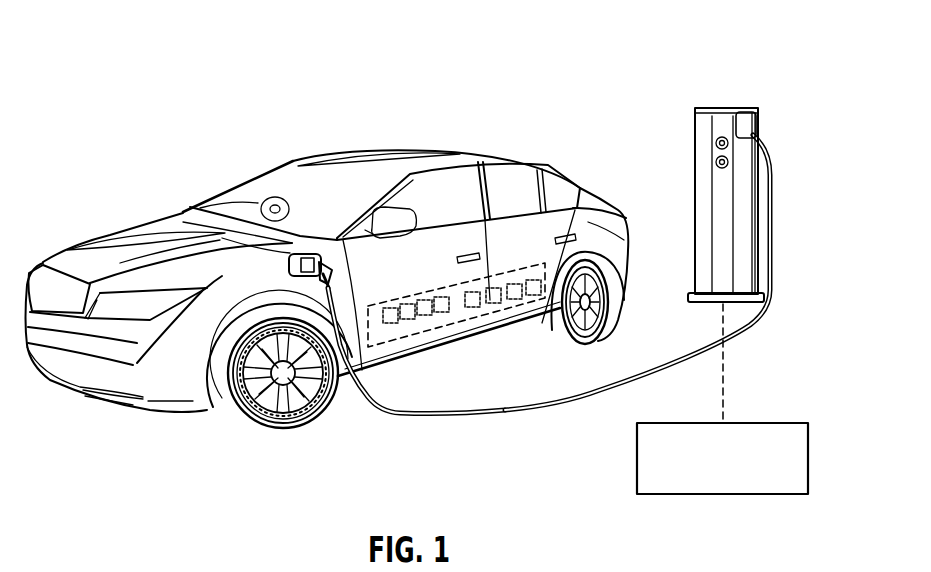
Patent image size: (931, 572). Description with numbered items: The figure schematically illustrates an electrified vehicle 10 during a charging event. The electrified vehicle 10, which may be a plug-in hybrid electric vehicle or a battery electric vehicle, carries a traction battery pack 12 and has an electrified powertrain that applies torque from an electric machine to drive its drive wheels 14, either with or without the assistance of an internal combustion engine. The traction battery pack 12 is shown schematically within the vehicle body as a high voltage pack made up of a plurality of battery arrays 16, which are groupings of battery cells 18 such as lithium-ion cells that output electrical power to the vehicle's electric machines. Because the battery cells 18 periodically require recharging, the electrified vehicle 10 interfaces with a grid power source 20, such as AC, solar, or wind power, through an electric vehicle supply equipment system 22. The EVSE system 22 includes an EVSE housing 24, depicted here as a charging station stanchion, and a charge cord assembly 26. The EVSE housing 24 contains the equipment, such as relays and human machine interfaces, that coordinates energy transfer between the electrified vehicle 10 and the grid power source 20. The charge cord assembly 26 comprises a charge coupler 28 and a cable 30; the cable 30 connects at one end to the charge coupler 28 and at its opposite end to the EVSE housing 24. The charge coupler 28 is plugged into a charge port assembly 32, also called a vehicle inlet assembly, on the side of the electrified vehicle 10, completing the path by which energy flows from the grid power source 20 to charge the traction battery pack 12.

The electrified vehicle 10 is at (88, 78).
The traction battery pack 12 is at (516, 266).
The drive wheels 14 is at (608, 304).
The battery arrays 16 is at (382, 326).
The battery cells 18 is at (482, 298).
The grid power source 20 is at (808, 462).
The electric vehicle supply equipment (EVSE) system 22 is at (706, 88).
The EVSE housing 24 is at (743, 120).
The charge cord assembly 26 is at (578, 400).
The charge coupler 28 is at (313, 258).
The cable 30 is at (380, 414).
The charge port assembly 32 is at (290, 272).